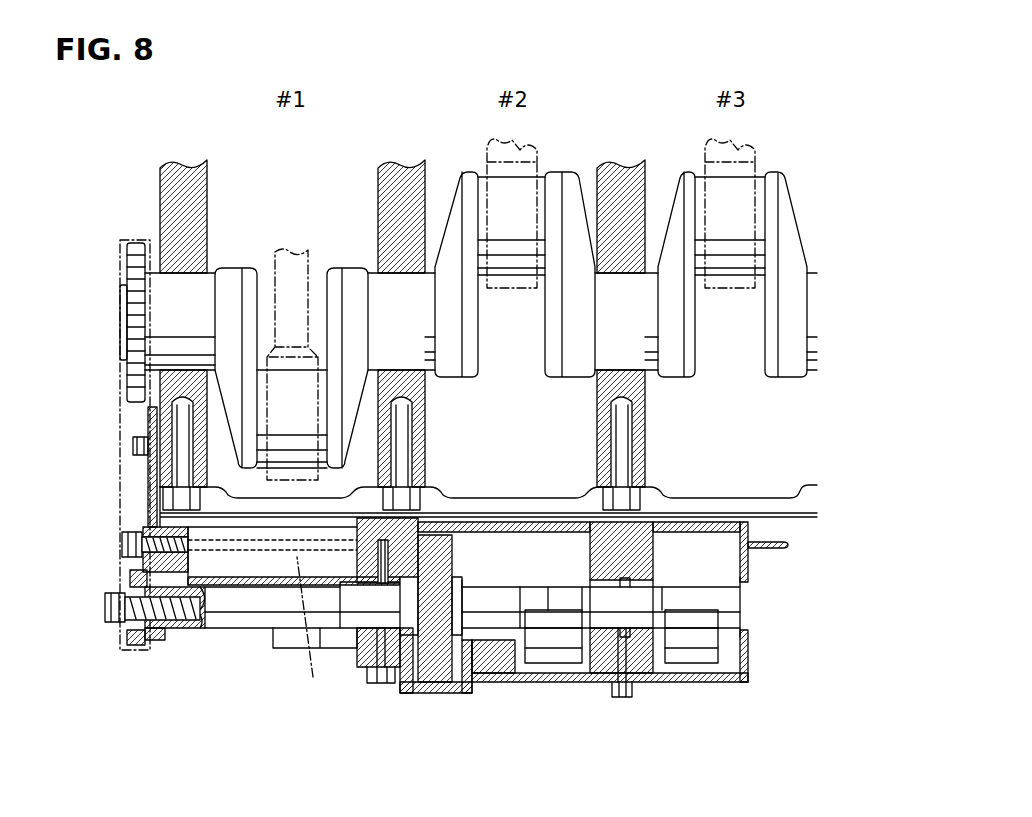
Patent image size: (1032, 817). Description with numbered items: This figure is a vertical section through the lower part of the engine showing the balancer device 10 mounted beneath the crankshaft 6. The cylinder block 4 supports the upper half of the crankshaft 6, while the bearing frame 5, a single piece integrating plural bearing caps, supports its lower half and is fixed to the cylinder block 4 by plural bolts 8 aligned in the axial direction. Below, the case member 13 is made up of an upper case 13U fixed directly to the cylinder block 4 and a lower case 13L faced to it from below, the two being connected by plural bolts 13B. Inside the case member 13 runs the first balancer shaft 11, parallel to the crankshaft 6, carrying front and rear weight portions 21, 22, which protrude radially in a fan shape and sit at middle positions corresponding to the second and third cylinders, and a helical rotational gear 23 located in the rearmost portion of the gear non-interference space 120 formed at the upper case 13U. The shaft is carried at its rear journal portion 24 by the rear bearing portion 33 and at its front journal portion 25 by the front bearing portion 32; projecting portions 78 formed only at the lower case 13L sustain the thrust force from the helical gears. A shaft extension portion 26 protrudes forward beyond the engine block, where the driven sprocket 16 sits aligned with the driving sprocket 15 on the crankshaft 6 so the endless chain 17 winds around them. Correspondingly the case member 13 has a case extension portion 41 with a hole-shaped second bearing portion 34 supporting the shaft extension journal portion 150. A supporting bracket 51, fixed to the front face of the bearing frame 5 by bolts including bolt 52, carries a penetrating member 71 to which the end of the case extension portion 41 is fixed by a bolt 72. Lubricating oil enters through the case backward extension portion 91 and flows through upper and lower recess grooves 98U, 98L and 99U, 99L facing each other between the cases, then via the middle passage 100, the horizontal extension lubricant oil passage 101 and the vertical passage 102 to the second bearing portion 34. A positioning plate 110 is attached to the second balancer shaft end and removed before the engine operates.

The cylinder block 4 is at (162, 183).
The bearing frame 5 is at (722, 497).
The crankshaft 6 is at (253, 252).
The bolts 8 is at (192, 445).
The balancer device 10 is at (116, 687).
The first balancer shaft 11 is at (498, 620).
The case member 13 is at (764, 693).
The upper case 13U is at (748, 565).
The lower case 13L is at (748, 657).
The bolts 13B is at (370, 683).
The driving sprocket 15 is at (133, 313).
The driven sprocket 16 is at (130, 582).
The endless chain 17 is at (120, 240).
The front weight portion 21 is at (553, 655).
The rear weight portion 22 is at (690, 655).
The rotational gear 23 is at (437, 672).
The rear journal portion 24 is at (602, 605).
The front journal portion 25 is at (365, 607).
The shaft extension portion 26 is at (228, 630).
The front bearing portion 32 is at (400, 690).
The rear bearing portion 33 is at (610, 630).
The second bearing portion 34 is at (160, 645).
The case extension portion 41 is at (243, 568).
The supporting bracket 51 is at (150, 420).
The bolt 52 is at (133, 447).
The penetrating member 71 is at (143, 525).
The bolt 72 is at (122, 545).
The projecting portion 78 is at (470, 690).
The case backward extension portion 91 is at (768, 545).
The upper recess groove 98U is at (628, 577).
The lower recess groove 98L is at (620, 655).
The upper recess groove 99U is at (458, 579).
The lower recess groove 99L is at (378, 683).
The middle passage 100 is at (388, 575).
The extension lubricant oil passage 101 is at (318, 630).
The vertical passage 102 is at (173, 642).
The positioning plate 110 is at (292, 648).
The gear non-interference space 120 is at (481, 543).
The shaft extension journal portion 150 is at (140, 628).